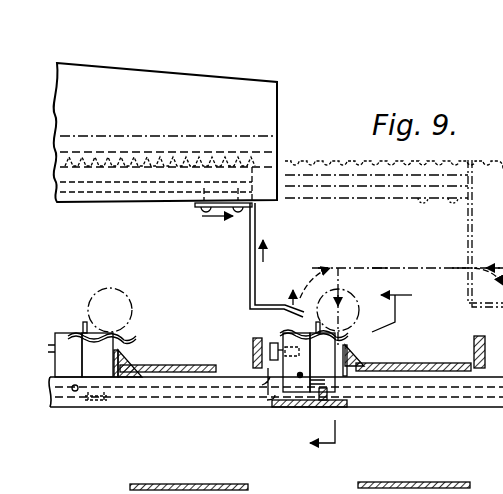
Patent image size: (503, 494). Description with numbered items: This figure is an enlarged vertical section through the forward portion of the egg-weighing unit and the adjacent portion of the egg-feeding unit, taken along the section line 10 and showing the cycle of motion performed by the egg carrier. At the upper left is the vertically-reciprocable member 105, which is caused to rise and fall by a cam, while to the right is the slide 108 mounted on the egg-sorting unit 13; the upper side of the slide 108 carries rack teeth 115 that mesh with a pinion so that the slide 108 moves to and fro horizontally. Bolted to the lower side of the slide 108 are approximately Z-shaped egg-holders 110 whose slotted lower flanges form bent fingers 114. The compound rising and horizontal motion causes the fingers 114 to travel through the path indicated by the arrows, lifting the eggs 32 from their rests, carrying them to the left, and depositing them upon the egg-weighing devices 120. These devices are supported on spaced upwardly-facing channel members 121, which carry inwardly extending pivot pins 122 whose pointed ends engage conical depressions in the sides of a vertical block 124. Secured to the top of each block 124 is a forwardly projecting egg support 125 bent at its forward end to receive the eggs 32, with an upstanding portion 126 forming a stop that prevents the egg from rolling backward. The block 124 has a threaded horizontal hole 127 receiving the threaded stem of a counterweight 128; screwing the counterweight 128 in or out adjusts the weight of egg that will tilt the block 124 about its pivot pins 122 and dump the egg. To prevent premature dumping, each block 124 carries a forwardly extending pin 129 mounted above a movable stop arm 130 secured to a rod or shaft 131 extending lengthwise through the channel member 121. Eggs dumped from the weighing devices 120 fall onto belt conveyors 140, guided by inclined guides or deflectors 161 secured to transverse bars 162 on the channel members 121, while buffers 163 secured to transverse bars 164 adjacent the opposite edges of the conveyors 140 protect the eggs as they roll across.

The vertically-reciprocable member 105 is at (208, 82).
The egg-holders 110 is at (251, 279).
The bent fingers 114 is at (292, 303).
The egg-sorting unit 13 is at (313, 153).
The rack teeth 115 is at (462, 153).
The slide 108 is at (362, 199).
The eggs 32 is at (125, 292).
The channel members 121 is at (452, 395).
The vertical block 124 is at (192, 355).
The pin 129 is at (209, 362).
The upstanding portion 126 is at (82, 322).
The egg support 125 is at (150, 325).
The inclined guides or deflectors 161 is at (124, 355).
The transverse bars 162 is at (358, 416).
The belt conveyors 140 is at (167, 366).
The pivot pins 122 is at (74, 392).
The movable stop arm 130 is at (96, 403).
The buffers 163 is at (252, 352).
The counterweight 128 is at (270, 343).
The threaded horizontal hole 127 is at (297, 362).
The egg-weighing devices 120 is at (282, 334).
The rod or shaft 131 is at (284, 408).
The transverse bars 164 is at (270, 385).
The section line 10 is at (280, 452).